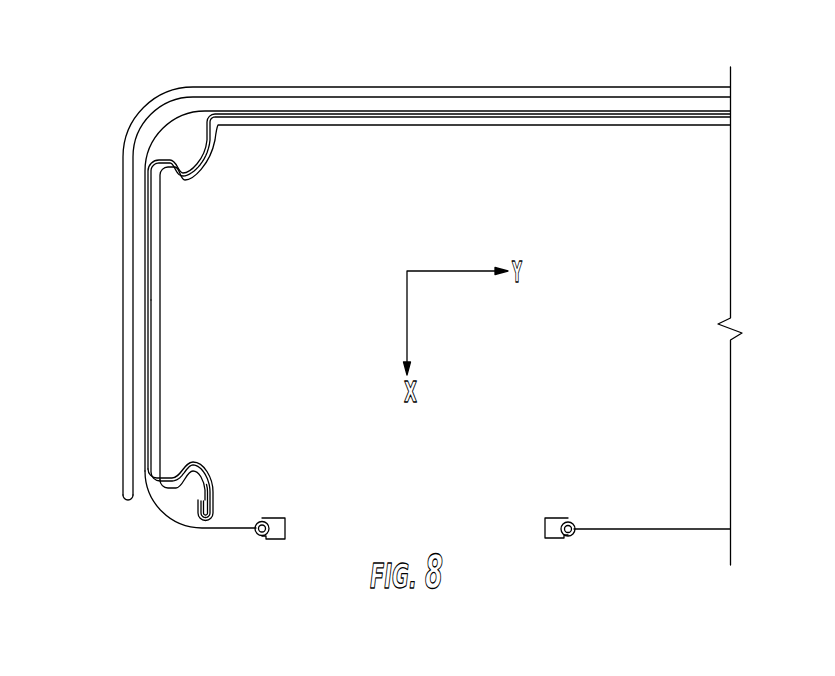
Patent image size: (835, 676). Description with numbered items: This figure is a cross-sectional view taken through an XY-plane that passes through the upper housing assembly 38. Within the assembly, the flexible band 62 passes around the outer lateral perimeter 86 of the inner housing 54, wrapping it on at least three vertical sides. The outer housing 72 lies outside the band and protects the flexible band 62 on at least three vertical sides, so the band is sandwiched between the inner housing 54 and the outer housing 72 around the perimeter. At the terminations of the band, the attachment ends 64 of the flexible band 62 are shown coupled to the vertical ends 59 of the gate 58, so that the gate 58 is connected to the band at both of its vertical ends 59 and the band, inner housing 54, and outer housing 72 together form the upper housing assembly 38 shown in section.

The upper housing assembly 38 is at (383, 71).
The outer housing 72 is at (139, 123).
The outer lateral perimeter 86 is at (148, 177).
The flexible band 62 is at (170, 123).
The inner housing 54 is at (155, 287).
The gate 58 is at (415, 531).
The vertical ends 59 is at (273, 519).
The attachment ends 64 is at (262, 537).